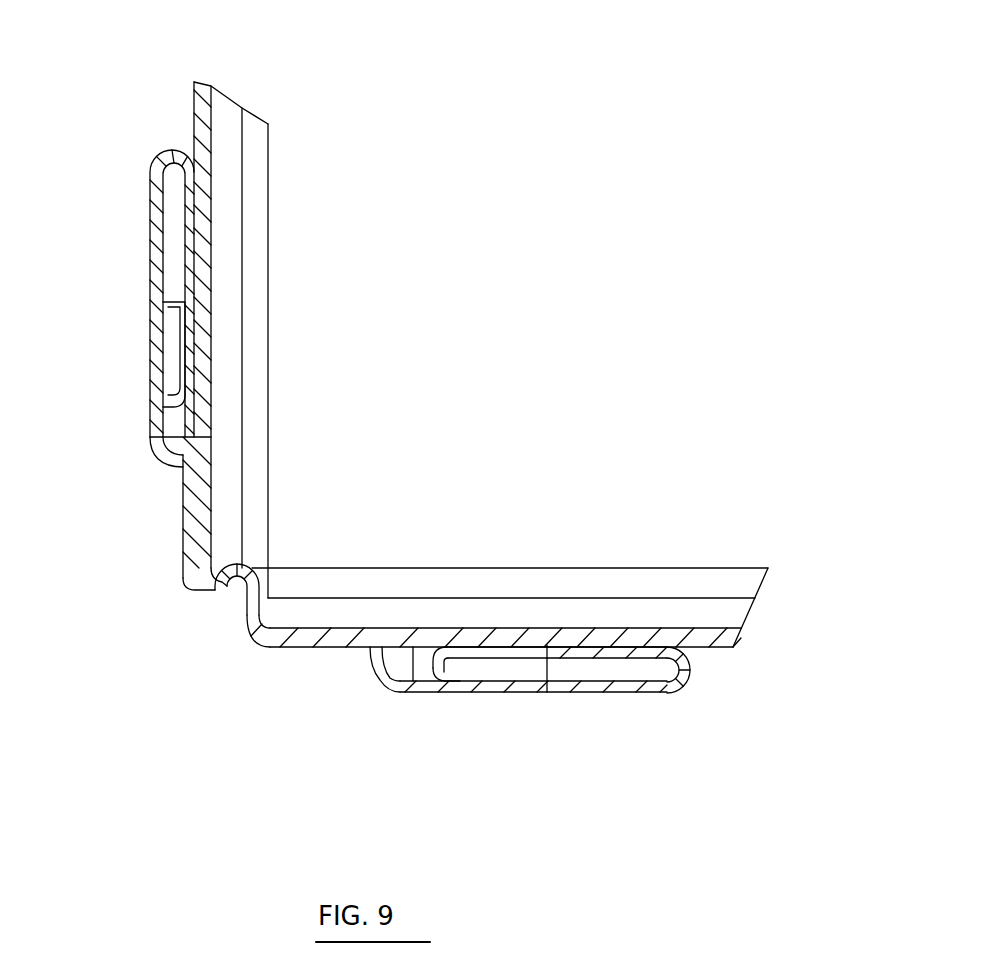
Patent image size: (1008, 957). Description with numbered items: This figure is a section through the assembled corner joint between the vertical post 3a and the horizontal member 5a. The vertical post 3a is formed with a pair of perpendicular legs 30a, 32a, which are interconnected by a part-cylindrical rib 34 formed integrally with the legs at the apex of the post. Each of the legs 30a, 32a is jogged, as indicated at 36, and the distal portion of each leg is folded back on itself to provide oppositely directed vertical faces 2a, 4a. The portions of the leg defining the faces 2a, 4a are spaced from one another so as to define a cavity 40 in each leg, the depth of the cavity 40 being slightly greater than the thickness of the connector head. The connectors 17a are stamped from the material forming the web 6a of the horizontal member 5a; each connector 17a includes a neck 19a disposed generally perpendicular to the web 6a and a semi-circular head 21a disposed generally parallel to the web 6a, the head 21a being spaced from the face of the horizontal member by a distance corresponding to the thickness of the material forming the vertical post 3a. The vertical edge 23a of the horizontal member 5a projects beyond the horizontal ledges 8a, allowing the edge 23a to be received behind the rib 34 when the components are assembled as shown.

The vertical face 2a is at (152, 225).
The vertical post 3a is at (162, 518).
The vertical face 4a is at (193, 243).
The horizontal member 5a is at (293, 254).
The web 6a is at (733, 637).
The horizontal ledge 8a is at (507, 610).
The connector 17a is at (420, 688).
The neck 19a is at (438, 650).
The head 21a is at (495, 670).
The vertical edge 23a is at (255, 650).
The leg 30a is at (624, 719).
The leg 32a is at (168, 133).
The part-cylindrical rib 34 is at (250, 588).
The jog 36 is at (157, 471).
The cavity 40 is at (175, 182).